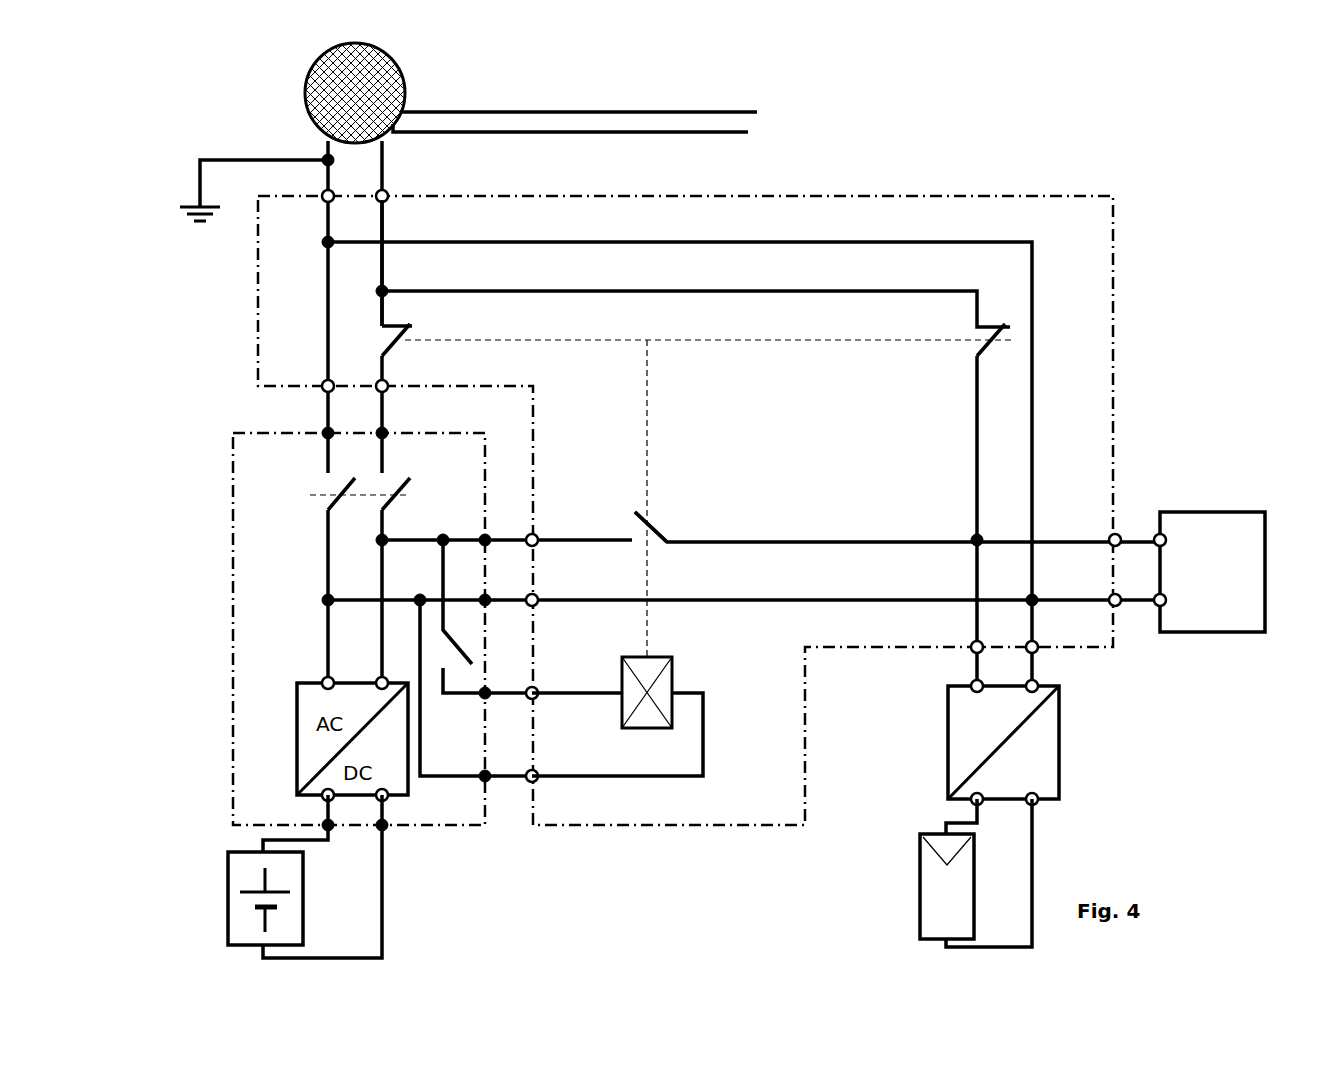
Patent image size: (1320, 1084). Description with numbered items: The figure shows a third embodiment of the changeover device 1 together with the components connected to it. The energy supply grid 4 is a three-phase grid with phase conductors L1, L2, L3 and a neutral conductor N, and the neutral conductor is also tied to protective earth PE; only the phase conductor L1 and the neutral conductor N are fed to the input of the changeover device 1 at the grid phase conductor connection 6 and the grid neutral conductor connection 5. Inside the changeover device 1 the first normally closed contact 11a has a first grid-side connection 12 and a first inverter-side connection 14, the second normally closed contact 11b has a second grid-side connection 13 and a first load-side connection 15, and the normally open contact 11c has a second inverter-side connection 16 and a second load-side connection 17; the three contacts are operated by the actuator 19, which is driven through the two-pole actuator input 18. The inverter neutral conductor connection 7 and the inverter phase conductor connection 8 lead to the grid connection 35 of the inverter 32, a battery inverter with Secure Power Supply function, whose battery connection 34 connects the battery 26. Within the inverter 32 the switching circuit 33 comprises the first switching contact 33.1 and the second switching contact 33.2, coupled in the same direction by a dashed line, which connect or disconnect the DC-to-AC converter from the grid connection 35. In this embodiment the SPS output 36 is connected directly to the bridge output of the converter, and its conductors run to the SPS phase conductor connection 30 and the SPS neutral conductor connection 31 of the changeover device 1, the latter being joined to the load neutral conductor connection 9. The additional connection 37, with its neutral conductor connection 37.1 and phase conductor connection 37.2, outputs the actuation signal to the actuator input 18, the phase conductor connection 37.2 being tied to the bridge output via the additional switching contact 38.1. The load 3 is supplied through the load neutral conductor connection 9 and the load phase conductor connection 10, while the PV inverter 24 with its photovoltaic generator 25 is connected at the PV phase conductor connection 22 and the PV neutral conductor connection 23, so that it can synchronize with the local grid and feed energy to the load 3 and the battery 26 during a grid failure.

The changeover device 1 is at (798, 191).
The load 3 is at (1209, 572).
The energy supply grid 4 is at (399, 101).
The grid neutral conductor connection 5 is at (321, 204).
The grid phase conductor connection 6 is at (390, 203).
The inverter neutral conductor connection 7 is at (321, 390).
The inverter phase conductor connection 8 is at (389, 392).
The load neutral conductor connection 9 is at (1122, 608).
The load phase conductor connection 10 is at (1121, 531).
The first normally closed contact 11a is at (420, 338).
The second normally closed contact 11b is at (968, 338).
The normally open contact 11c is at (657, 507).
The first grid-side connection 12 is at (393, 277).
The second grid-side connection 13 is at (982, 311).
The first inverter-side connection 14 is at (395, 365).
The first load-side connection 15 is at (975, 370).
The second inverter-side connection 16 is at (616, 535).
The second load-side connection 17 is at (689, 538).
The actuator input 18 is at (542, 688).
The actuator 19 is at (650, 726).
The PV phase conductor connection 22 is at (970, 652).
The PV neutral conductor connection 23 is at (1040, 655).
The PV inverter 24 is at (1061, 743).
The photovoltaic generator 25 is at (918, 893).
The battery 26 is at (226, 899).
The SPS phase conductor connection 30 is at (538, 533).
The SPS neutral conductor connection 31 is at (528, 610).
The inverter 32 is at (232, 632).
The switching circuit 33 is at (280, 553).
The first switching contact 33.1 is at (301, 518).
The second switching contact 33.2 is at (368, 515).
The battery connection 34 is at (362, 835).
The grid connection 35 is at (352, 438).
The SPS output 36 is at (496, 565).
The additional connection 37 is at (511, 761).
The neutral conductor connection 37.1 is at (485, 790).
The phase conductor connection 37.2 is at (496, 700).
The additional switching contact 38.1 is at (454, 672).
The neutral conductor N is at (319, 137).
The protective earth PE is at (232, 194).
The phase conductor L1 is at (391, 152).
The phase conductor L2 is at (490, 131).
The phase conductor L3 is at (556, 112).